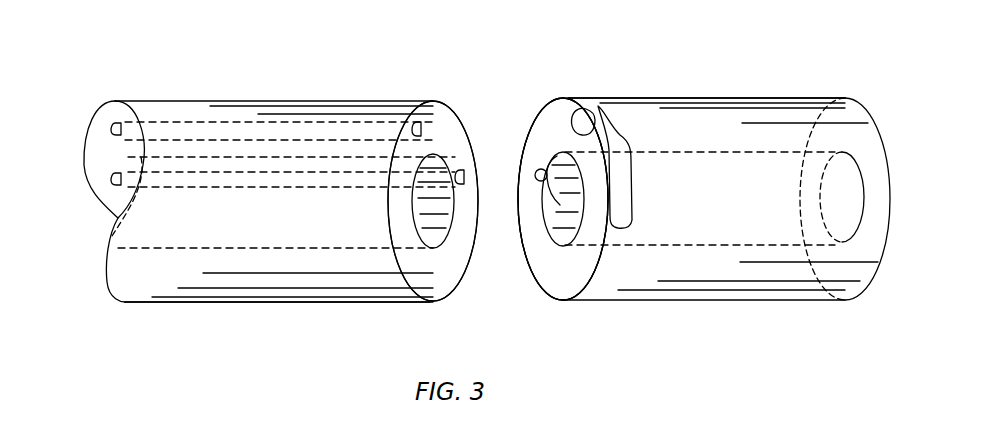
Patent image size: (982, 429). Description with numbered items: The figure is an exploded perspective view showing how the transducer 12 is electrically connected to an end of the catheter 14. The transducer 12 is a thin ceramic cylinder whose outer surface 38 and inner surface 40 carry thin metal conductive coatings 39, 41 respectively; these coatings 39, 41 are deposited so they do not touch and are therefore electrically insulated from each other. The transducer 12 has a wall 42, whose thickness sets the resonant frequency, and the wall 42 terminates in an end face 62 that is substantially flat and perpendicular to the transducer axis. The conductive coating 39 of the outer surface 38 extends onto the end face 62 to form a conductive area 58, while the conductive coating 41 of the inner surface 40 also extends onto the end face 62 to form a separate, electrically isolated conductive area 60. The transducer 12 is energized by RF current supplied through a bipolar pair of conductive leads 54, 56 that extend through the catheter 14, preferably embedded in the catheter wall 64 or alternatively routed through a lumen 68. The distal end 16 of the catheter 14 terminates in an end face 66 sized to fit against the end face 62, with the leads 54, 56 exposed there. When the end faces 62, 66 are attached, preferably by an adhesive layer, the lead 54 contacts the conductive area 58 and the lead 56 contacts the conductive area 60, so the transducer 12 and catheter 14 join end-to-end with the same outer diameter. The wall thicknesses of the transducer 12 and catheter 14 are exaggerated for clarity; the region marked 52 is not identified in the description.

The transducer 12 is at (750, 82).
The catheter 14 is at (308, 88).
The distal end 16 is at (345, 302).
The outer surface 38 is at (674, 96).
The conductive coating 39 is at (624, 132).
The inner surface 40 is at (558, 156).
The conductive coating 41 is at (542, 168).
The wall 42 is at (565, 292).
The ring outer surface 52 is at (530, 252).
The conductive lead 54 is at (382, 118).
The conductive lead 56 is at (460, 152).
The conductive area 58 is at (586, 118).
The conductive area 60 is at (553, 165).
The end face 62 is at (560, 278).
The wall 64 is at (430, 278).
The end face 66 is at (460, 265).
The lumen 68 is at (466, 201).